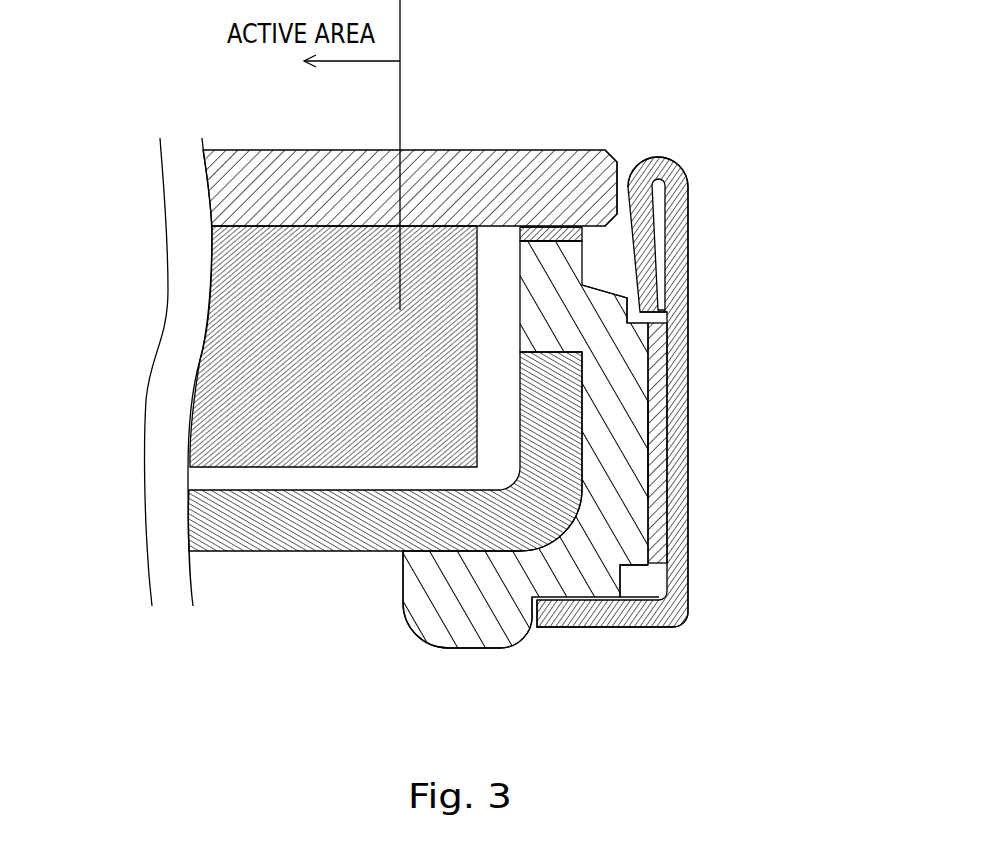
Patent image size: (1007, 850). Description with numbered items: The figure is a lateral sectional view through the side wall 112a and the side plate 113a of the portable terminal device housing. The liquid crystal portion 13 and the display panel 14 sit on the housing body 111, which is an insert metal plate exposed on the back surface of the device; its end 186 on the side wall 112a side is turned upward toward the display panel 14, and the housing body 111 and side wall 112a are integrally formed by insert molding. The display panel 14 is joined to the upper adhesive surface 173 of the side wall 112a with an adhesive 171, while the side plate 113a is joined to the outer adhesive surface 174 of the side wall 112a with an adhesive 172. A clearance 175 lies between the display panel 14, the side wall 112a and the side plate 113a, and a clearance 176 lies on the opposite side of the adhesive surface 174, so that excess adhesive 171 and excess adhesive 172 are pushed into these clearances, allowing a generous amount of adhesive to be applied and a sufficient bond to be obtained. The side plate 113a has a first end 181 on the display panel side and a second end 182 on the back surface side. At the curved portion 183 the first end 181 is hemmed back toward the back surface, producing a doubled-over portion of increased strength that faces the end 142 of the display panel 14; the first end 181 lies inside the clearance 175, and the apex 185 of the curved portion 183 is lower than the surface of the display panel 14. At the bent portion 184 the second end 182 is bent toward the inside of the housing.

The liquid crystal portion 13 is at (217, 333).
The display panel 14 is at (207, 192).
The housing body 111 is at (188, 515).
The side wall 112a is at (625, 452).
The side plate 113a is at (688, 408).
The end of the display panel 142 is at (619, 182).
The adhesive 171 is at (573, 227).
The adhesive 172 is at (667, 492).
The adhesive surface 173 is at (537, 241).
The adhesive surface 174 is at (667, 537).
The clearance 175 is at (613, 275).
The clearance 176 is at (655, 586).
The first end 181 is at (657, 313).
The second end 182 is at (528, 618).
The curved portion 183 is at (697, 162).
The bent portion 184 is at (687, 633).
The apex 185 is at (659, 157).
The end of the housing body 186 is at (552, 350).